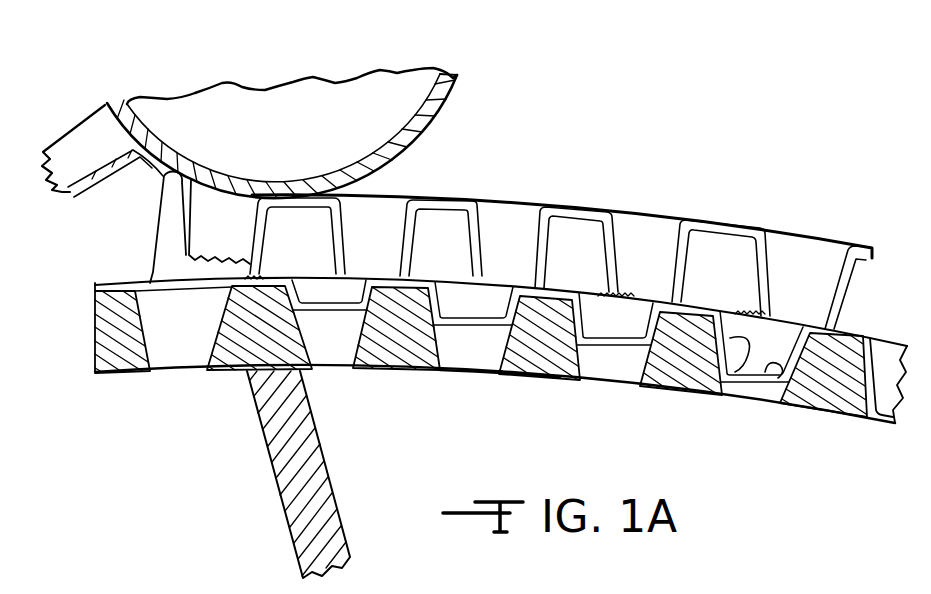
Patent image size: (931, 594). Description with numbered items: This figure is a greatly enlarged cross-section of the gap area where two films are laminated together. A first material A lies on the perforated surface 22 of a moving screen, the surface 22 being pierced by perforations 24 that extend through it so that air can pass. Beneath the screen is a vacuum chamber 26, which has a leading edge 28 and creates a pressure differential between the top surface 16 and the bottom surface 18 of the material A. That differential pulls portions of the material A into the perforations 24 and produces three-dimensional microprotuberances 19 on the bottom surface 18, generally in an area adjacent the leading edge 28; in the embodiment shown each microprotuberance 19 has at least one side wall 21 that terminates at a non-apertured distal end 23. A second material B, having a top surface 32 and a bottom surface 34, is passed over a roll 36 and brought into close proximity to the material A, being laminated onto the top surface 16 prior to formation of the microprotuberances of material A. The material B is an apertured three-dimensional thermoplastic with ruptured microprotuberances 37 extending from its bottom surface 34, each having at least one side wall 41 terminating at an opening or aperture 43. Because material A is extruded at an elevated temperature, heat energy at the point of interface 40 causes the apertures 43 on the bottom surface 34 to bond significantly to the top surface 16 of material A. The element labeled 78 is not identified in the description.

The top surface 16 is at (127, 278).
The bottom surface 18 is at (132, 337).
The microprotuberances 19 is at (613, 357).
The side wall 21 is at (717, 390).
The surface 22 is at (385, 368).
The non-apertured distal end 23 is at (773, 400).
The perforations 24 is at (358, 329).
The vacuum chamber 26 is at (549, 422).
The leading edge 28 is at (313, 443).
The top surface 32 is at (447, 197).
The bottom surface 34 is at (70, 193).
The roll 36 is at (447, 100).
The ruptured microprotuberances 37 is at (548, 229).
The point of interface 40 is at (250, 235).
The side wall 41 is at (619, 233).
The aperture 43 is at (653, 292).
The post 78 is at (160, 233).
The first material A is at (90, 289).
The second material B is at (80, 124).